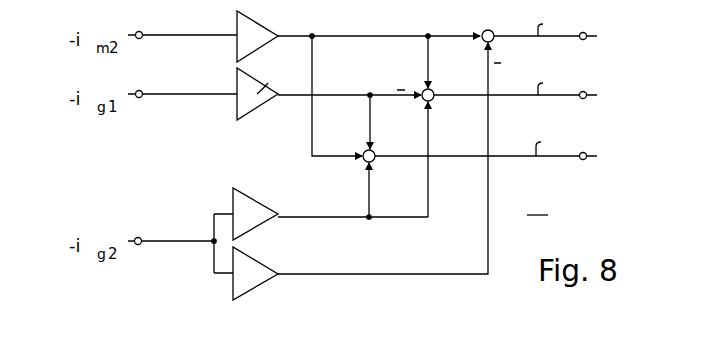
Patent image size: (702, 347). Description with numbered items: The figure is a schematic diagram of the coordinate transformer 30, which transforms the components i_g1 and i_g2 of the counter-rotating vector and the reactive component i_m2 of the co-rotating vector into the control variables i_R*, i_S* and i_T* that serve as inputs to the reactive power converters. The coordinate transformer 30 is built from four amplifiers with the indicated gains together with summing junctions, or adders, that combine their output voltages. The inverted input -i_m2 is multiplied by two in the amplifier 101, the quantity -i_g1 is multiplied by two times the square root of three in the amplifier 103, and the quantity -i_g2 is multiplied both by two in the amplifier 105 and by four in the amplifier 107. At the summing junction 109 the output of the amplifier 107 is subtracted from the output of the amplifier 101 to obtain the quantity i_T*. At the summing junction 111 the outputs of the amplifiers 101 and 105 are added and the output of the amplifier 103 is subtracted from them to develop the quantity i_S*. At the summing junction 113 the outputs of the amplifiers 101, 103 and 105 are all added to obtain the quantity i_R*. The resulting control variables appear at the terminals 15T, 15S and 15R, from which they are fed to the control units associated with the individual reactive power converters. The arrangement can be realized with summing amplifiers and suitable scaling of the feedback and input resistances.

The coordinate transformer 30 is at (370, 139).
The amplifier 101 is at (266, 26).
The amplifier 103 is at (250, 104).
The amplifier 105 is at (266, 212).
The amplifier 107 is at (257, 270).
The summing junction 109 is at (494, 21).
The summing junction 111 is at (432, 90).
The summing junction 113 is at (373, 151).
The terminal 15T is at (605, 37).
The terminal 15S is at (605, 96).
The terminal 15R is at (605, 157).